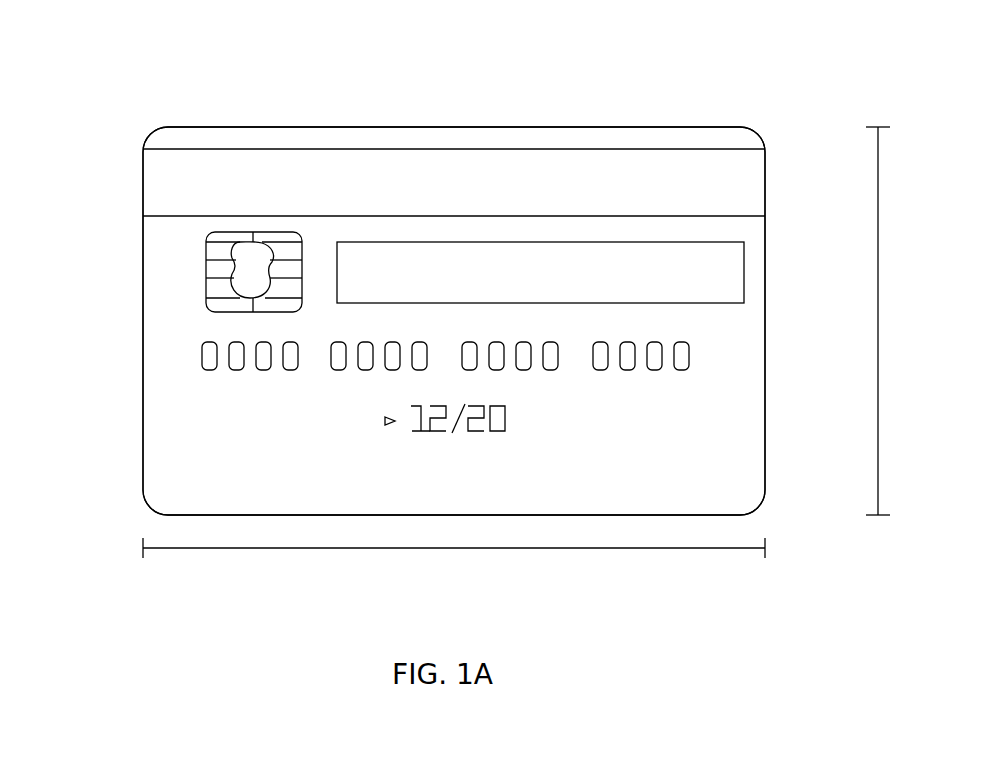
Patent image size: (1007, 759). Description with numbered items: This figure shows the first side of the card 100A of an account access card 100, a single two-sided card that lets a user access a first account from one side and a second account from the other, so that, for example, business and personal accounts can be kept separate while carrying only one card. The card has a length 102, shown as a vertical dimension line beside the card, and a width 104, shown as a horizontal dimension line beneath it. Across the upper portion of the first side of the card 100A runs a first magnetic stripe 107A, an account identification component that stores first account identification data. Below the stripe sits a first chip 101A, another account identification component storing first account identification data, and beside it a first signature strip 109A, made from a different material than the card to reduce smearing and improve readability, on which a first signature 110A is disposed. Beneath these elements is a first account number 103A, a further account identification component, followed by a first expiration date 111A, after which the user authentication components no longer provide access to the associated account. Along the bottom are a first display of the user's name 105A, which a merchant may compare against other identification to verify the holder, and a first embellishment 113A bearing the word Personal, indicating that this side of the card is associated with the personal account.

The account access card 100 is at (431, 35).
The first side of the card 100A is at (672, 112).
The length 102 is at (878, 167).
The width 104 is at (230, 550).
The first chip 101A is at (206, 265).
The first account number 103A is at (202, 352).
The first display of the user's name 105A is at (202, 465).
The first magnetic stripe 107A is at (143, 185).
The first signature strip 109A is at (744, 266).
The first signature 110A is at (553, 276).
The first expiration date 111A is at (510, 418).
The first embellishment 113A is at (745, 465).